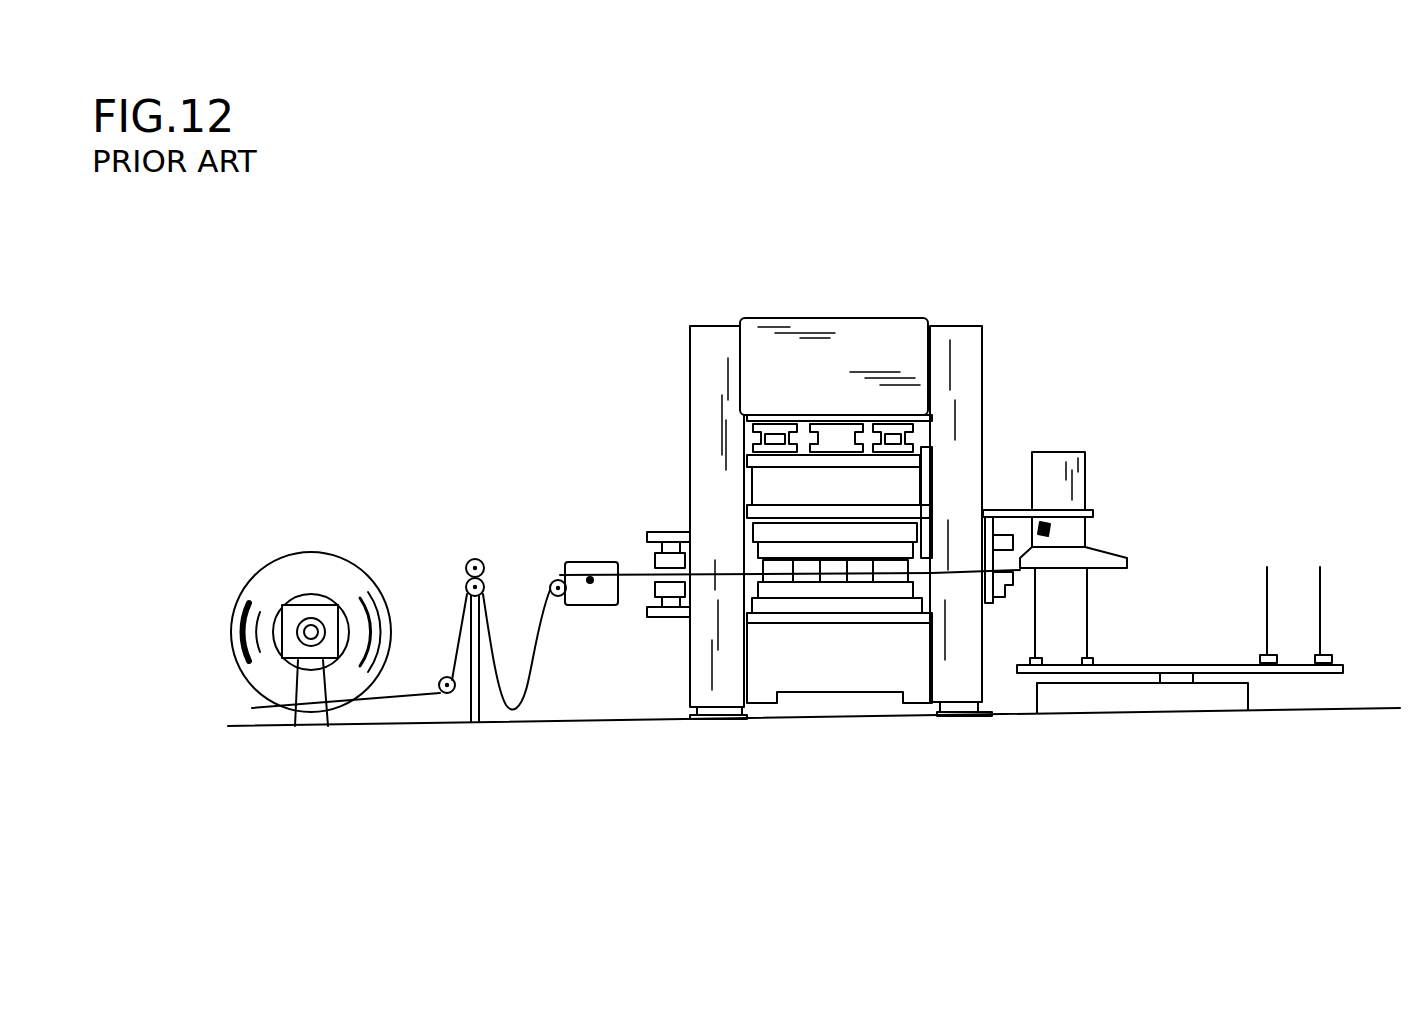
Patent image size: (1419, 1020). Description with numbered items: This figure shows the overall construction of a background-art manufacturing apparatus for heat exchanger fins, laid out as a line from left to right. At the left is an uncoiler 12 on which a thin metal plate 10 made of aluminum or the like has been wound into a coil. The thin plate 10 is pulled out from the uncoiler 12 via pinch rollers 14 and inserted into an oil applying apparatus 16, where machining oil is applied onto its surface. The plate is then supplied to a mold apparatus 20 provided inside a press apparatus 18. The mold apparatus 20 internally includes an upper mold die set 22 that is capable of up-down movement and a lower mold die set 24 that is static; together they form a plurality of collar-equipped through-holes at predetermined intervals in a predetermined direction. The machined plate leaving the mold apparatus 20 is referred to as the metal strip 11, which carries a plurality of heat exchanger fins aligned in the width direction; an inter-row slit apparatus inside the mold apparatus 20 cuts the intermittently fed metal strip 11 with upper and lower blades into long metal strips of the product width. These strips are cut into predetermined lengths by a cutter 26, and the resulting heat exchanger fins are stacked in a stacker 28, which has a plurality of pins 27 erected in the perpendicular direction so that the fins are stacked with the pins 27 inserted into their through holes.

The thin metal plate 10 is at (403, 695).
The metal strip 11 is at (950, 572).
The uncoiler 12 is at (255, 563).
The pinch rollers 14 is at (472, 562).
The oil applying apparatus 16 is at (573, 562).
The press apparatus 18 is at (813, 282).
The mold apparatus 20 is at (875, 498).
The upper mold die set 22 is at (900, 555).
The lower mold die set 24 is at (895, 588).
The cutter 26 is at (1005, 560).
The pins 27 is at (1087, 622).
The stacker 28 is at (1205, 588).